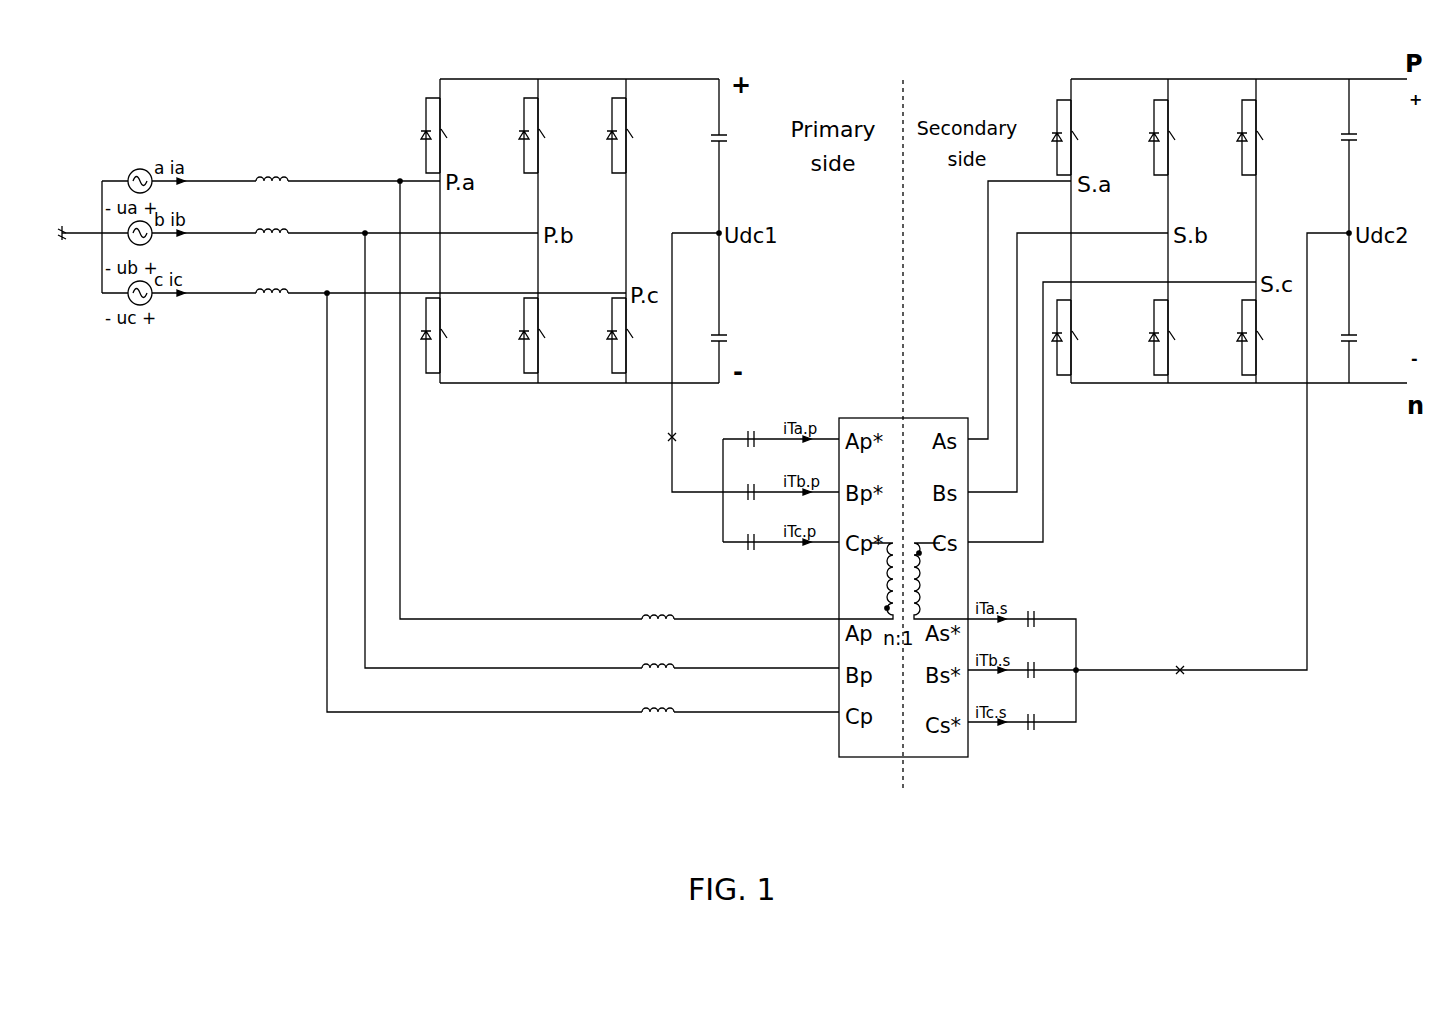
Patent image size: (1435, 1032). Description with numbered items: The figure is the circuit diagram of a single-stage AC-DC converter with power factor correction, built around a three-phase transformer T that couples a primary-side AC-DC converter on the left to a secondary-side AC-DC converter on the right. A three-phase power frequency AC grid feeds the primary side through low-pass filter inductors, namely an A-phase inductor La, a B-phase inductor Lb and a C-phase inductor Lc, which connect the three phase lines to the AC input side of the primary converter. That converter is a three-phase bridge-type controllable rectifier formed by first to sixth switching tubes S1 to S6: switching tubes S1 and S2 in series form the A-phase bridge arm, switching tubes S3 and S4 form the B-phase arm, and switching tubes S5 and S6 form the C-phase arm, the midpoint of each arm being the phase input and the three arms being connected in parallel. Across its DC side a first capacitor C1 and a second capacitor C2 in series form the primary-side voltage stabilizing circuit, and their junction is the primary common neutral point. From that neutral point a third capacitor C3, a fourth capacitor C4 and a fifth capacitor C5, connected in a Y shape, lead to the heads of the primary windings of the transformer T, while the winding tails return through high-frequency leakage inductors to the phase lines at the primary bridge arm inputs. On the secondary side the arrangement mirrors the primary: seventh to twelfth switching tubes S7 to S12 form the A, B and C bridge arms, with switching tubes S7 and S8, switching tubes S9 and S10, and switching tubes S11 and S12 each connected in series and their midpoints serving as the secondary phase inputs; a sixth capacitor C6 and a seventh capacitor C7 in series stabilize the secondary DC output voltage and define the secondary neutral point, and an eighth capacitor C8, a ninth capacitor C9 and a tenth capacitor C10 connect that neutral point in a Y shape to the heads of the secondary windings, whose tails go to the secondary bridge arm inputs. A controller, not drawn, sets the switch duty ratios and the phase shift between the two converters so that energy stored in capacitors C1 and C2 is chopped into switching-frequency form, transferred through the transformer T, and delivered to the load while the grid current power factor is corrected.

The A-phase inductor La is at (272, 165).
The B-phase inductor Lb is at (272, 217).
The C-phase inductor Lc is at (272, 277).
The first switching tube S1 is at (451, 135).
The second switching tube S2 is at (451, 335).
The third switching tube S3 is at (549, 135).
The fourth switching tube S4 is at (549, 335).
The fifth switching tube S5 is at (637, 135).
The sixth switching tube S6 is at (637, 335).
The seventh switching tube S7 is at (1082, 137).
The eighth switching tube S8 is at (1082, 337).
The ninth switching tube S9 is at (1179, 137).
The tenth switching tube S10 is at (1185, 337).
The eleventh switching tube S11 is at (1273, 137).
The twelfth switching tube S12 is at (1273, 337).
The first capacitor C1 is at (734, 139).
The second capacitor C2 is at (734, 339).
The third capacitor C3 is at (743, 428).
The fourth capacitor C4 is at (743, 481).
The fifth capacitor C5 is at (743, 531).
The sixth capacitor C6 is at (1364, 139).
The seventh capacitor C7 is at (1364, 339).
The eighth capacitor C8 is at (1032, 607).
The ninth capacitor C9 is at (1032, 658).
The tenth capacitor C10 is at (1038, 710).
The transformer T is at (903, 574).